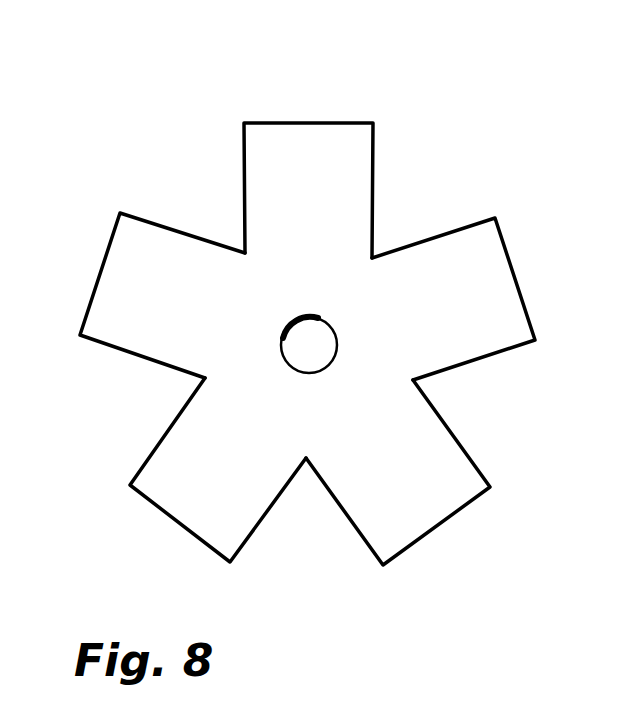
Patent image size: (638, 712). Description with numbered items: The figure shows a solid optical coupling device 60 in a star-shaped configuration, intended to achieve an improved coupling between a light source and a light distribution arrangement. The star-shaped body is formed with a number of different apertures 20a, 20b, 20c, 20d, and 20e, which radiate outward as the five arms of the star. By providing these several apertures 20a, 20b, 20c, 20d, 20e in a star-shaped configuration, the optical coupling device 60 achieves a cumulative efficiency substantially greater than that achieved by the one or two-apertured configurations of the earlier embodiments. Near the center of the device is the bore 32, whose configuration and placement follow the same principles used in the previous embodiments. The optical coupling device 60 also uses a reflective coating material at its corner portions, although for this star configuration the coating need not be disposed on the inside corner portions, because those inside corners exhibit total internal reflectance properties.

The aperture 20a is at (290, 122).
The aperture 20b is at (100, 263).
The aperture 20c is at (172, 520).
The aperture 20d is at (448, 520).
The aperture 20e is at (520, 283).
The optical coupling device 60 is at (307, 322).
The bore 32 is at (334, 330).